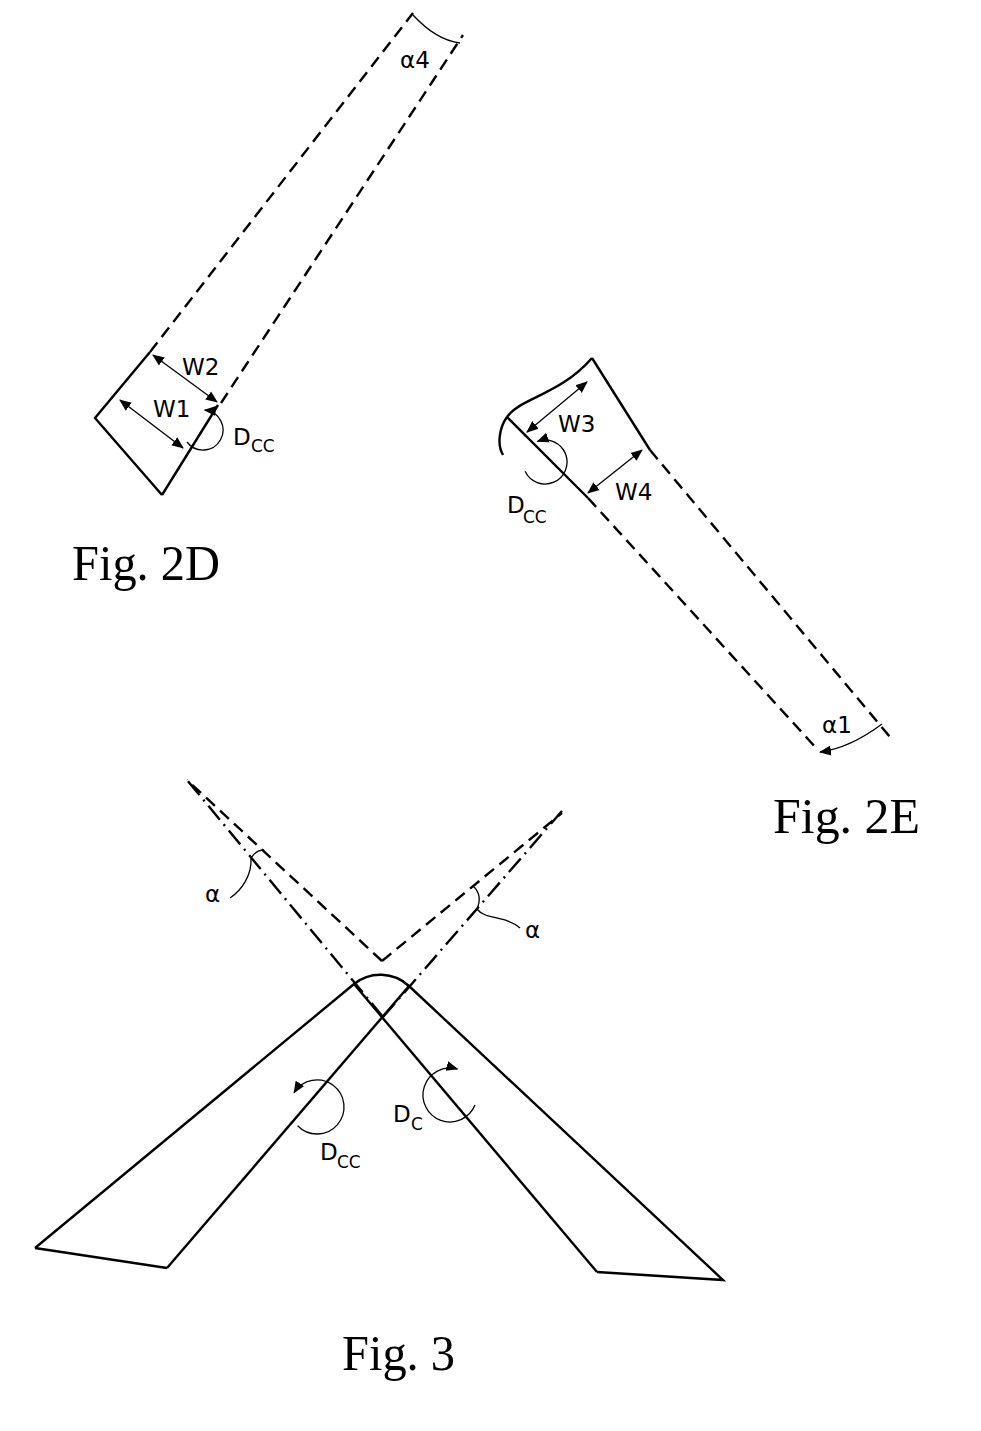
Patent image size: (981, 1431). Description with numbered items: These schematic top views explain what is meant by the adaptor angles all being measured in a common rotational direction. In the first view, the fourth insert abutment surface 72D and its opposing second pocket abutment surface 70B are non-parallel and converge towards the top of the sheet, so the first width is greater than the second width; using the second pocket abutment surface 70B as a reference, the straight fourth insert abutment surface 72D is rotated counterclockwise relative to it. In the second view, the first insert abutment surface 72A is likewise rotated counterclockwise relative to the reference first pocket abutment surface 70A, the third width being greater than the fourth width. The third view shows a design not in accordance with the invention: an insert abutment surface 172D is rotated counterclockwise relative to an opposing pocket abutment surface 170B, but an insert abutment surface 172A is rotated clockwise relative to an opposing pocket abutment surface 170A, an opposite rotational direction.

In FIG. 2D, the second pocket abutment surface 70B is at (133, 373).
In FIG. 2D, the fourth insert abutment surface 72D is at (175, 481).
In FIG. 2E, the first pocket abutment surface 70A is at (623, 418).
In FIG. 2E, the first insert abutment surface 72A is at (503, 455).
In FIG. 3, the pocket abutment surface 170A is at (577, 1138).
In FIG. 3, the pocket abutment surface 170B is at (142, 1160).
In FIG. 3, the insert abutment surface 172A is at (555, 1223).
In FIG. 3, the insert abutment surface 172D is at (235, 1190).